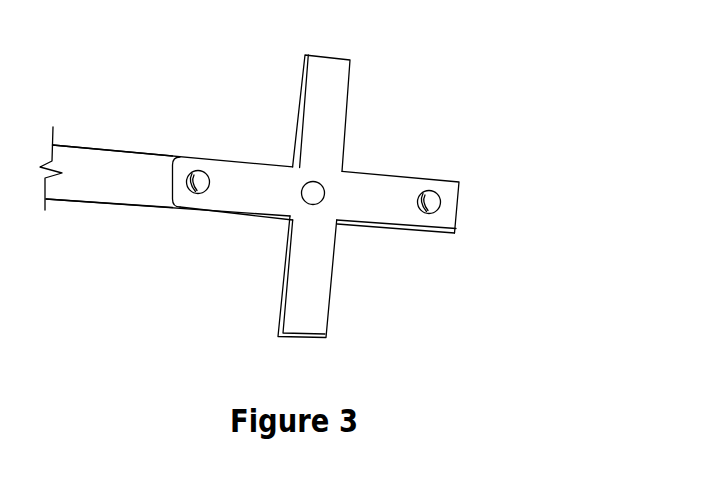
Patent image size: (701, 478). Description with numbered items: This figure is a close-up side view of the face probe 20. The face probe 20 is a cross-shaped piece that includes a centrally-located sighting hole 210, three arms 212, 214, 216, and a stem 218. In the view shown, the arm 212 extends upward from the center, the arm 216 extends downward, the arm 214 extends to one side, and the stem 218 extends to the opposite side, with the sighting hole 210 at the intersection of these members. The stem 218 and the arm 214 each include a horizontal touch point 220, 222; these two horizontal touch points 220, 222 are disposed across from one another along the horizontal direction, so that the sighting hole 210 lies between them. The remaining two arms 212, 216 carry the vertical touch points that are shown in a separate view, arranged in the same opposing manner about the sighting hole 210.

The face probe 20 is at (278, 30).
The sighting hole 210 is at (323, 190).
The arm 212 is at (333, 62).
The arm 214 is at (461, 188).
The arm 216 is at (312, 332).
The stem 218 is at (217, 200).
The horizontal touch point 220 is at (203, 176).
The horizontal touch point 222 is at (431, 192).